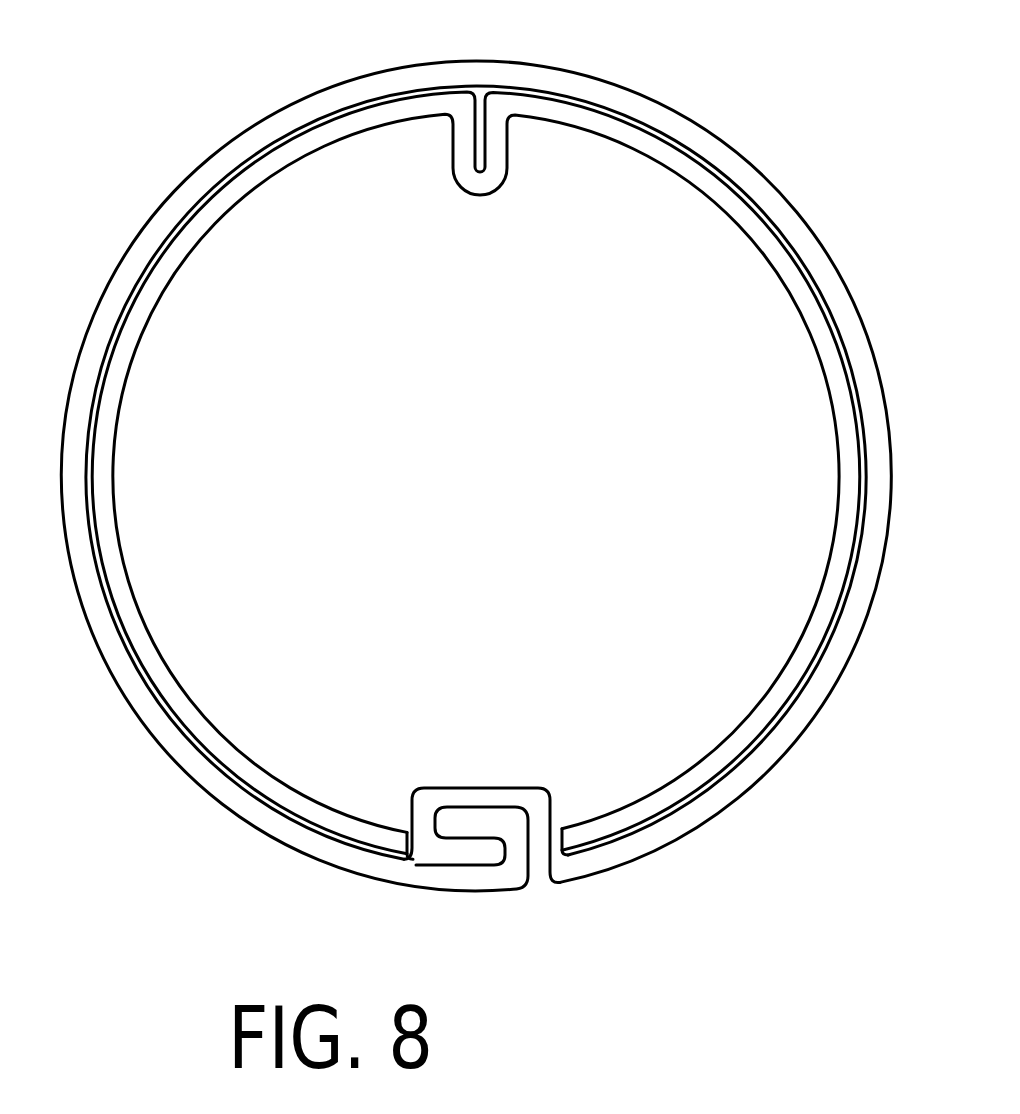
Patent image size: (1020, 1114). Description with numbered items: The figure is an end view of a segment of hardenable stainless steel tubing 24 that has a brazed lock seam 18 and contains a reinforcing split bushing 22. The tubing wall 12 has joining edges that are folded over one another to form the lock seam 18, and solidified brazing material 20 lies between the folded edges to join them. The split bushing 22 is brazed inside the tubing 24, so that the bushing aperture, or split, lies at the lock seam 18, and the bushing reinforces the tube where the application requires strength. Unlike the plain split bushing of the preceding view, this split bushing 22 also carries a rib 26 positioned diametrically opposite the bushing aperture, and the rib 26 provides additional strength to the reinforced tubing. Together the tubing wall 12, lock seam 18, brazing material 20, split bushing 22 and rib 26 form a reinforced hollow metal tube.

The tubing wall 12 is at (708, 150).
The lock seam 18 is at (462, 770).
The solidified brazing material 20 is at (835, 623).
The split bushing 22 is at (833, 368).
The tubing 24 is at (143, 177).
The rib 26 is at (435, 170).